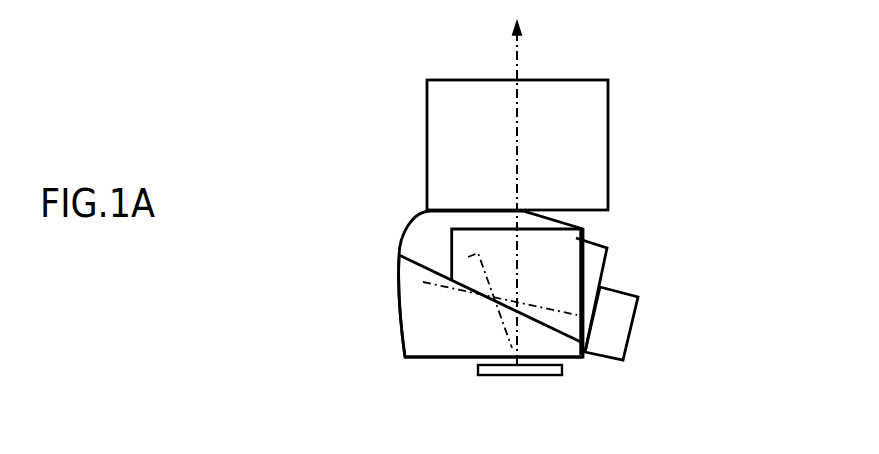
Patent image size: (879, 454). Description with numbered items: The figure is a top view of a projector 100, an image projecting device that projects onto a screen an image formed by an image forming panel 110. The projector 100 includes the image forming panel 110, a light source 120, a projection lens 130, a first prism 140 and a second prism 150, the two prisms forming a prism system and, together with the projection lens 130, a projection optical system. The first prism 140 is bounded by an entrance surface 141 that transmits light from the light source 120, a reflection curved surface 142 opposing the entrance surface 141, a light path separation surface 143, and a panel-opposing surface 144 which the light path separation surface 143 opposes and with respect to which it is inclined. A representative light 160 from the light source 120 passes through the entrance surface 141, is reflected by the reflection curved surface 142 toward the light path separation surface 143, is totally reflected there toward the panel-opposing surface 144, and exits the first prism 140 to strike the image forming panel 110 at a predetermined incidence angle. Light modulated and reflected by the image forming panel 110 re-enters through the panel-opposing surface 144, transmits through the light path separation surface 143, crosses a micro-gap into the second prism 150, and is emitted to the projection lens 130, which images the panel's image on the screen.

The projector 100 is at (411, 42).
The image forming panel 110 is at (578, 393).
The light source 120 is at (677, 317).
The projection lens 130 is at (587, 144).
The first prism 140 is at (433, 284).
The entrance surface 141 is at (657, 274).
The reflection curved surface 142 is at (331, 307).
The light path separation surface 143 is at (441, 252).
The panel-opposing surface 144 is at (430, 388).
The second prism 150 is at (596, 247).
The representative light 160 is at (605, 191).